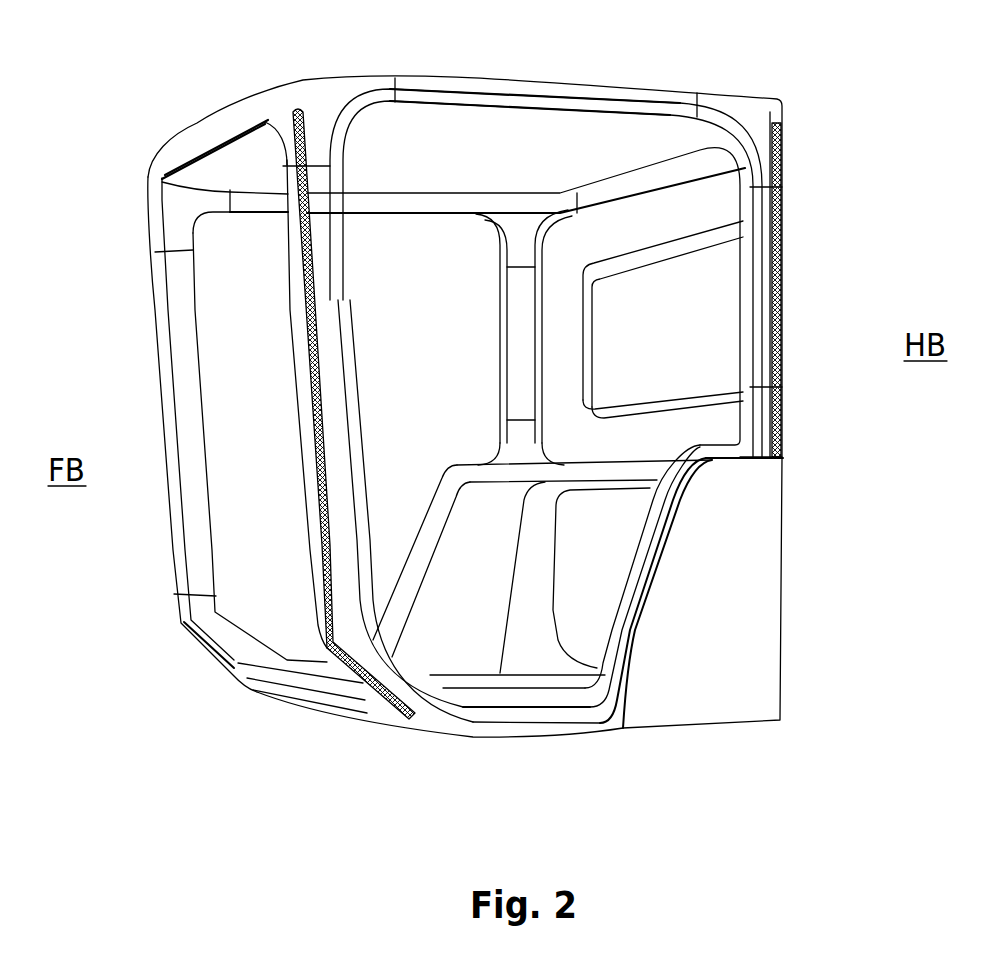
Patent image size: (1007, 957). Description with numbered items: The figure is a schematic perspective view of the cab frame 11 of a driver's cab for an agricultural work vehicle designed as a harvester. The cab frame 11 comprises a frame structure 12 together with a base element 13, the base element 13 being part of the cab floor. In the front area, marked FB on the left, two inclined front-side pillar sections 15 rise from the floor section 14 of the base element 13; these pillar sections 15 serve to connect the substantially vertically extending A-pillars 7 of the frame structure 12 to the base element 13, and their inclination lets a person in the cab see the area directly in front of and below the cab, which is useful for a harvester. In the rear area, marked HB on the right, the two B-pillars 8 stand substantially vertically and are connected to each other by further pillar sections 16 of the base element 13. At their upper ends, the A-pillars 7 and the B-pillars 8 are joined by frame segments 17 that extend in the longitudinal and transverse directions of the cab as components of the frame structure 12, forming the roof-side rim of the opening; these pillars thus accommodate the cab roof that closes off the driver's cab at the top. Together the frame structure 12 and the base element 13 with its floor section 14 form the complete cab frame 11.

The A-pillar 7 is at (343, 587).
The B-pillar 8 is at (515, 320).
The cab frame 11 is at (112, 140).
The frame structure 12 is at (160, 377).
The base element 13 is at (787, 578).
The floor section 14 is at (474, 716).
The front-side pillar section 15 is at (228, 662).
The pillar section 16 is at (512, 437).
The frame segment 17 is at (186, 133).